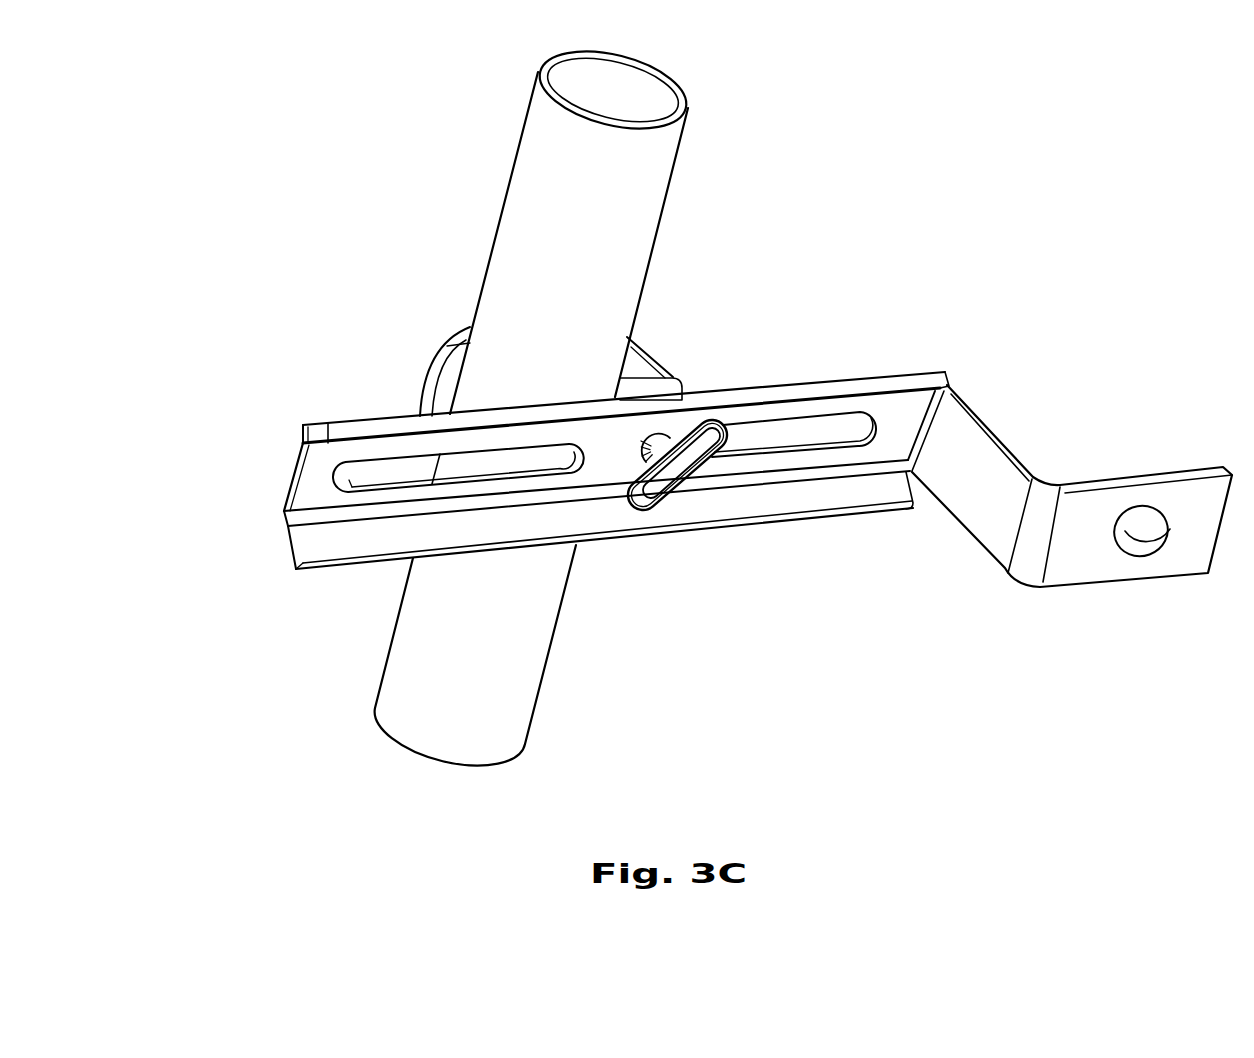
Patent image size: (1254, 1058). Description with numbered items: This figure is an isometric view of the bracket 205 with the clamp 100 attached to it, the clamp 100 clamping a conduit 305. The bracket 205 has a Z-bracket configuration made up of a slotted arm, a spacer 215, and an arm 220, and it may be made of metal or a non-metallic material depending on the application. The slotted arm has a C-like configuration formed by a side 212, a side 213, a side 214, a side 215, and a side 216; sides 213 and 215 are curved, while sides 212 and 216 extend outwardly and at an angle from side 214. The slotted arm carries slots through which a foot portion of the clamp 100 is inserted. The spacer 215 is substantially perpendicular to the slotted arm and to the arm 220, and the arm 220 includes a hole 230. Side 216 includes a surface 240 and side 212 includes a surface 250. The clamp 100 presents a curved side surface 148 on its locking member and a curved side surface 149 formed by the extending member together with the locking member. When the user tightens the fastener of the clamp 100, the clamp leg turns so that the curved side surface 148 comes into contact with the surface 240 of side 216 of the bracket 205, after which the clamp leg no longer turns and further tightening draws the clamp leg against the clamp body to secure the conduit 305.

The clamp 100 is at (656, 315).
The curved side surface 148 is at (640, 505).
The curved side surface 149 is at (712, 421).
The bracket 205 is at (303, 389).
The side 212 is at (347, 423).
The side 213 is at (302, 433).
The side 214 is at (282, 480).
The spacer 215 is at (283, 520).
The side 216 is at (284, 551).
The arm 220 is at (1128, 558).
The hole 230 is at (1135, 530).
The surface 240 is at (772, 497).
The surface 250 is at (347, 425).
The conduit 305 is at (643, 182).